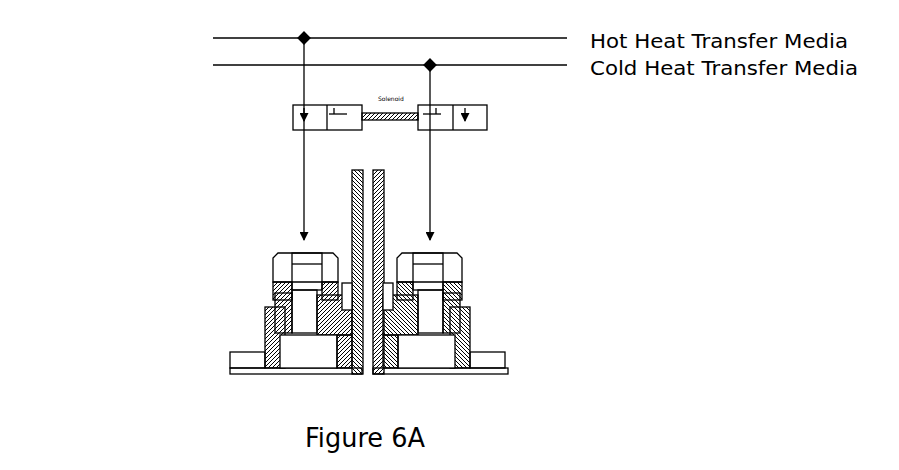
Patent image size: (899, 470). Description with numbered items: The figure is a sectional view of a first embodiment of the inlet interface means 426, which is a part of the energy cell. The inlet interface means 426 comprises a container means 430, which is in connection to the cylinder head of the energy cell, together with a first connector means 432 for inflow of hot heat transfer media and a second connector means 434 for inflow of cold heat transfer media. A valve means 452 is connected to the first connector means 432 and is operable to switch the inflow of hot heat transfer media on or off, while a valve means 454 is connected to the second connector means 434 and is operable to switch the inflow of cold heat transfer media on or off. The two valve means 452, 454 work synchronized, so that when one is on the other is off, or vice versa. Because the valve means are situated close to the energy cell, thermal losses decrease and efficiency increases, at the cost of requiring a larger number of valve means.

The inlet interface means 426 is at (485, 320).
The container means 430 is at (300, 352).
The first connector means 432 is at (272, 252).
The second connector means 434 is at (536, 272).
The valve means 452 is at (285, 120).
The valve means 454 is at (505, 122).